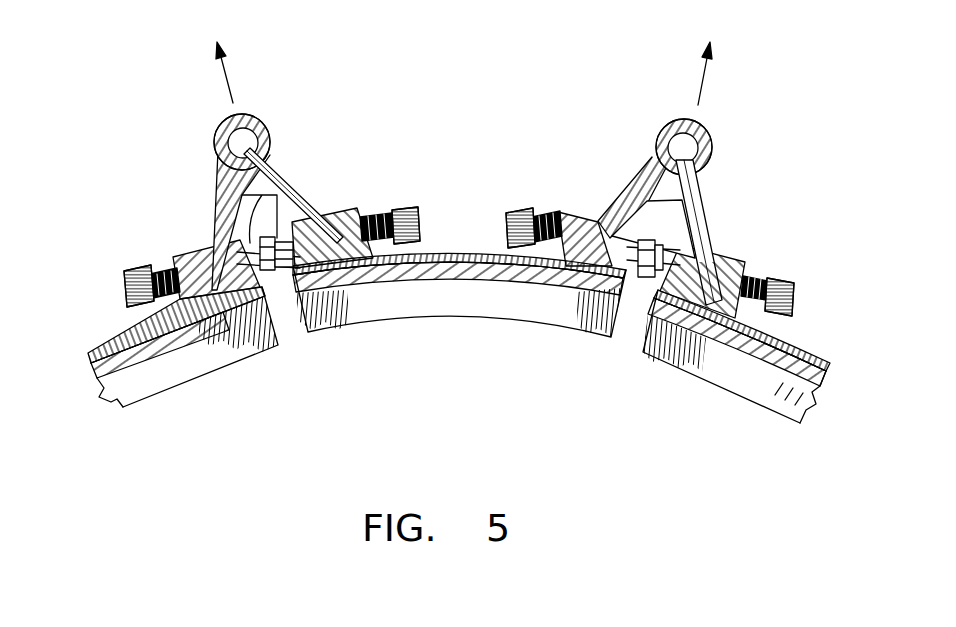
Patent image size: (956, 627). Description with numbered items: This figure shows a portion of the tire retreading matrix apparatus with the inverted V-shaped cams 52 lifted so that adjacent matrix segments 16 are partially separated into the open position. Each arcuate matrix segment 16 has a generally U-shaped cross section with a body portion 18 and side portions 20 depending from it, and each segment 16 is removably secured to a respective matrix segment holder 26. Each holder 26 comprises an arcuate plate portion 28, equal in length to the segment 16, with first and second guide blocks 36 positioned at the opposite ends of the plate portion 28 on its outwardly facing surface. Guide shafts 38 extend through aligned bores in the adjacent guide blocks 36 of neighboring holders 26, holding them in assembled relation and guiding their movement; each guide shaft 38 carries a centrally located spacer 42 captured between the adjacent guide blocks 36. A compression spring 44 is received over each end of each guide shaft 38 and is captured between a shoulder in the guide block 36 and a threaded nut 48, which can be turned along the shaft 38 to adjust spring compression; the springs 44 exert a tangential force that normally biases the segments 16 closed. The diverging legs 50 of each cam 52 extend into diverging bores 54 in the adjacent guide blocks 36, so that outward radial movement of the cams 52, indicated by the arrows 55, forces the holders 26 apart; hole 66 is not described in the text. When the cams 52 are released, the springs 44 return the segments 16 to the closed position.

The matrix segment 16 is at (190, 370).
The body portion 18 is at (143, 352).
The side portions 20 is at (130, 395).
The matrix segment holder 26 is at (105, 340).
The arcuate plate portion 28 is at (98, 341).
The guide blocks 36 is at (185, 246).
The guide shaft 38 is at (261, 196).
The spacer 42 is at (270, 238).
The compression spring 44 is at (160, 276).
The threaded nut 48 is at (135, 280).
The diverging legs 50 is at (222, 216).
The inverted V-shaped cam 52 is at (220, 150).
The diverging bores 54 is at (222, 345).
The arrows 55 is at (226, 77).
The pivot hole 66 is at (262, 122).